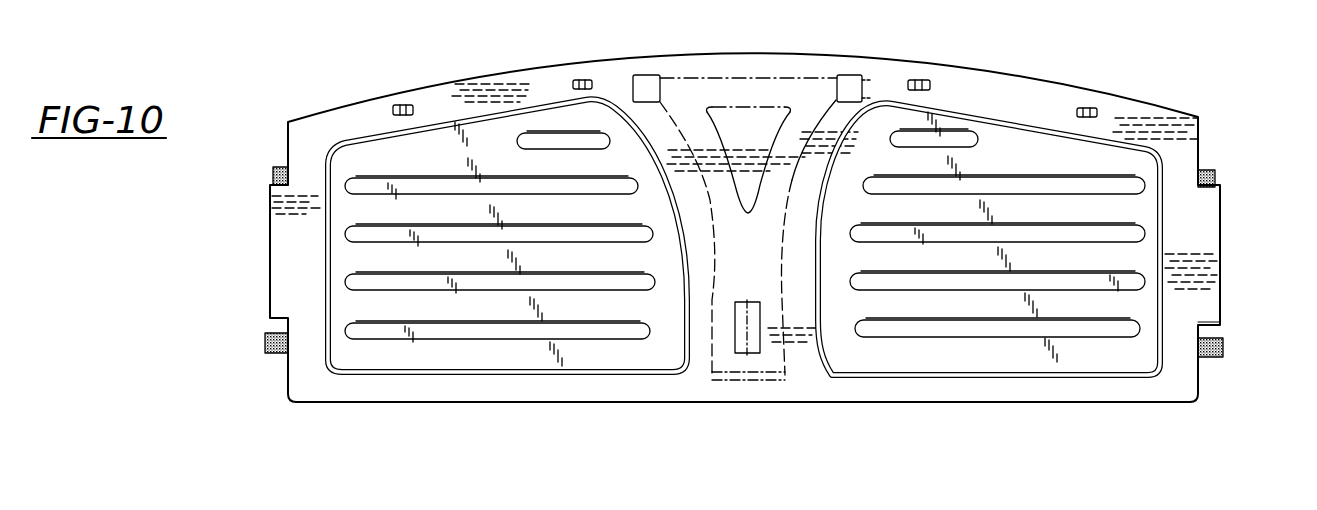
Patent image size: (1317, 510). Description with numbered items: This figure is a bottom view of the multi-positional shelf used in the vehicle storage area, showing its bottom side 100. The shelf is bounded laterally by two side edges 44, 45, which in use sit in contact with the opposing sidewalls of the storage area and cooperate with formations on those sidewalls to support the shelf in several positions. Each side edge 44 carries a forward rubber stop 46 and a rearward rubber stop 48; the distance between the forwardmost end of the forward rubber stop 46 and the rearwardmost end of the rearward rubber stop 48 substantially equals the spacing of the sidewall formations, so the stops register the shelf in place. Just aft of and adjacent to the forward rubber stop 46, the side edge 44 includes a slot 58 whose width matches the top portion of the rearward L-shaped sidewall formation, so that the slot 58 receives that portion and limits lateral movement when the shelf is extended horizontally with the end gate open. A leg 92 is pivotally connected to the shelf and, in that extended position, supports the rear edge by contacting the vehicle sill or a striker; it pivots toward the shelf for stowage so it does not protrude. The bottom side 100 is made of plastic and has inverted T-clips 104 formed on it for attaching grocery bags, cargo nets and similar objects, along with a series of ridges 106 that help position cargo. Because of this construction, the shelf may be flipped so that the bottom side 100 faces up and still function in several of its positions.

The side edge 44 is at (1222, 268).
The side edge 45 is at (270, 277).
The forward rubber stop 46 is at (264, 343).
The rearward rubber stop 48 is at (274, 167).
The slot 58 is at (1215, 331).
The leg 92 is at (812, 90).
The bottom side 100 is at (810, 226).
The inverted T-clips 104 is at (580, 80).
The ridges 106 is at (1123, 178).